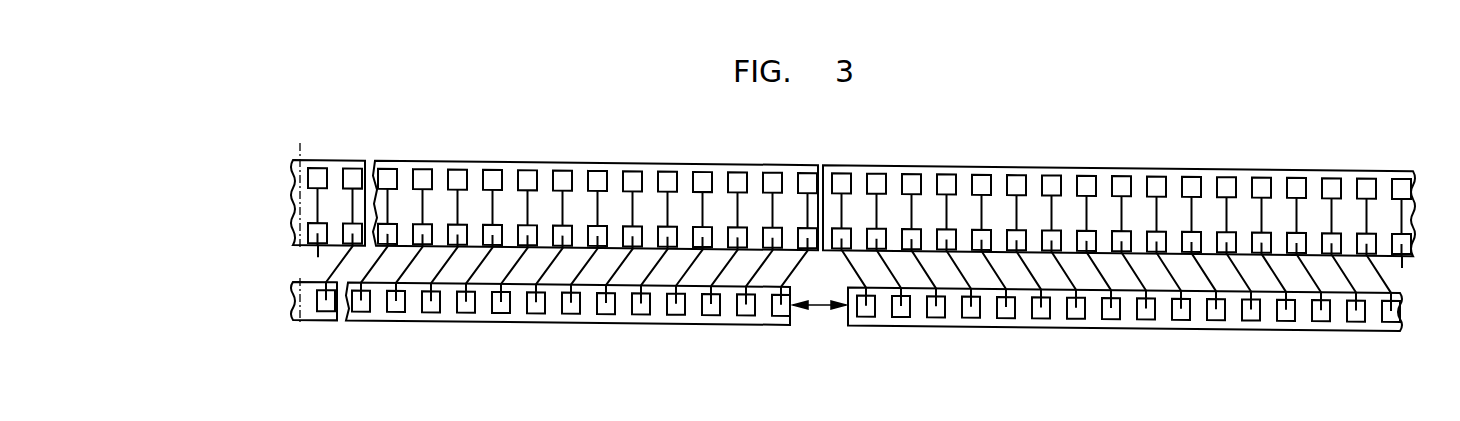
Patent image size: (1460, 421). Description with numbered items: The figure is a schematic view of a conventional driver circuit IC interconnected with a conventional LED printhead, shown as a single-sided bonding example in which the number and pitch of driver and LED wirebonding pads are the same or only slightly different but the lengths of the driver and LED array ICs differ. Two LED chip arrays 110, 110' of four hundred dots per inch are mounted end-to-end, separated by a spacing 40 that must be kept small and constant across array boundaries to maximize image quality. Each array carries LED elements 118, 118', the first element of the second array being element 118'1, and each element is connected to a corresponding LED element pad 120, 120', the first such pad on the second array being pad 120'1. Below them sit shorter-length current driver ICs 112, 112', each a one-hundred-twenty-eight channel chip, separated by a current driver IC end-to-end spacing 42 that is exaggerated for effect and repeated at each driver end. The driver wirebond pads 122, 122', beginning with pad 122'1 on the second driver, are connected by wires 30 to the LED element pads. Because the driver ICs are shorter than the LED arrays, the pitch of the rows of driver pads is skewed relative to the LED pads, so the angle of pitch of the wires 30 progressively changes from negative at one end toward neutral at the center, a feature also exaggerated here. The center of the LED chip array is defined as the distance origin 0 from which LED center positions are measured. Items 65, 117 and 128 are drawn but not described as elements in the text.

The distance origin 0 is at (342, 147).
The wires 30 is at (590, 264).
The spacing between adjacent LED chip arrays 40 is at (825, 158).
The current driver IC end-to-end spacing 42 is at (818, 310).
The offset spacing 65 is at (406, 138).
The LED chip array 110 is at (554, 192).
The LED chip array 110' is at (1119, 193).
The current driver IC 112 is at (540, 316).
The current driver IC 112' is at (1125, 327).
The conductive trace 117 is at (860, 180).
The LED element 118 is at (562, 239).
The LED element 118' is at (1121, 165).
The LED element 118'1 is at (1121, 165).
The LED element pad 120 is at (563, 184).
The LED element pad 120' is at (1121, 193).
The LED element pad 120'1 is at (1121, 193).
The current driver pad 122 is at (553, 321).
The current driver pad 122' is at (1121, 330).
The current driver pad 122'1 is at (1121, 330).
The lower contact pad 128 is at (803, 238).